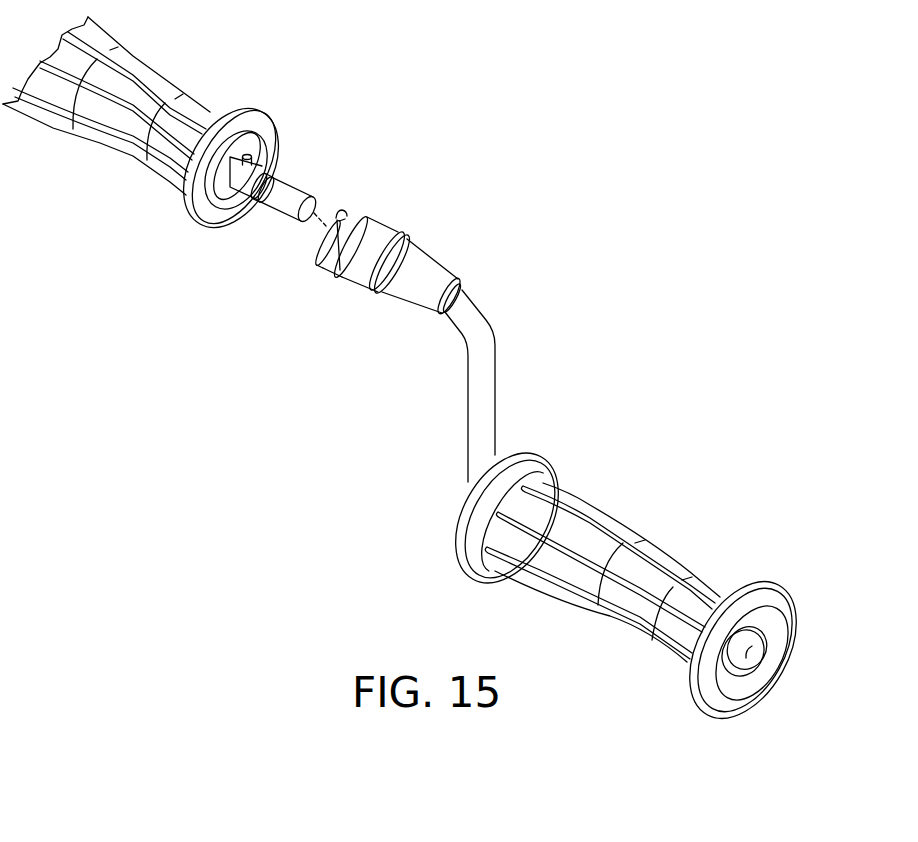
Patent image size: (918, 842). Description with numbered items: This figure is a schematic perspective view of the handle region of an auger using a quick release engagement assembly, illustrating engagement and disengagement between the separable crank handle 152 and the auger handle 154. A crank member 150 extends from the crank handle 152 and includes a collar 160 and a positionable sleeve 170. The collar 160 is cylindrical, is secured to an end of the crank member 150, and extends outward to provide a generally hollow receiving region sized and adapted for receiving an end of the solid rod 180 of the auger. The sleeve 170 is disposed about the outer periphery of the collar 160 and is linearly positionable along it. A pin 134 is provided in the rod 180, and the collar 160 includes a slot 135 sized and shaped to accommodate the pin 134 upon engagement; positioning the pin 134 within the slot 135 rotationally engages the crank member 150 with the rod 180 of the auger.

The auger handle 154 is at (128, 90).
The pin 134 is at (253, 163).
The solid rod 180 is at (281, 201).
The slot 135 is at (347, 208).
The collar 160 is at (327, 245).
The sleeve 170 is at (376, 230).
The crank member 150 is at (483, 377).
The crank handle 152 is at (620, 520).